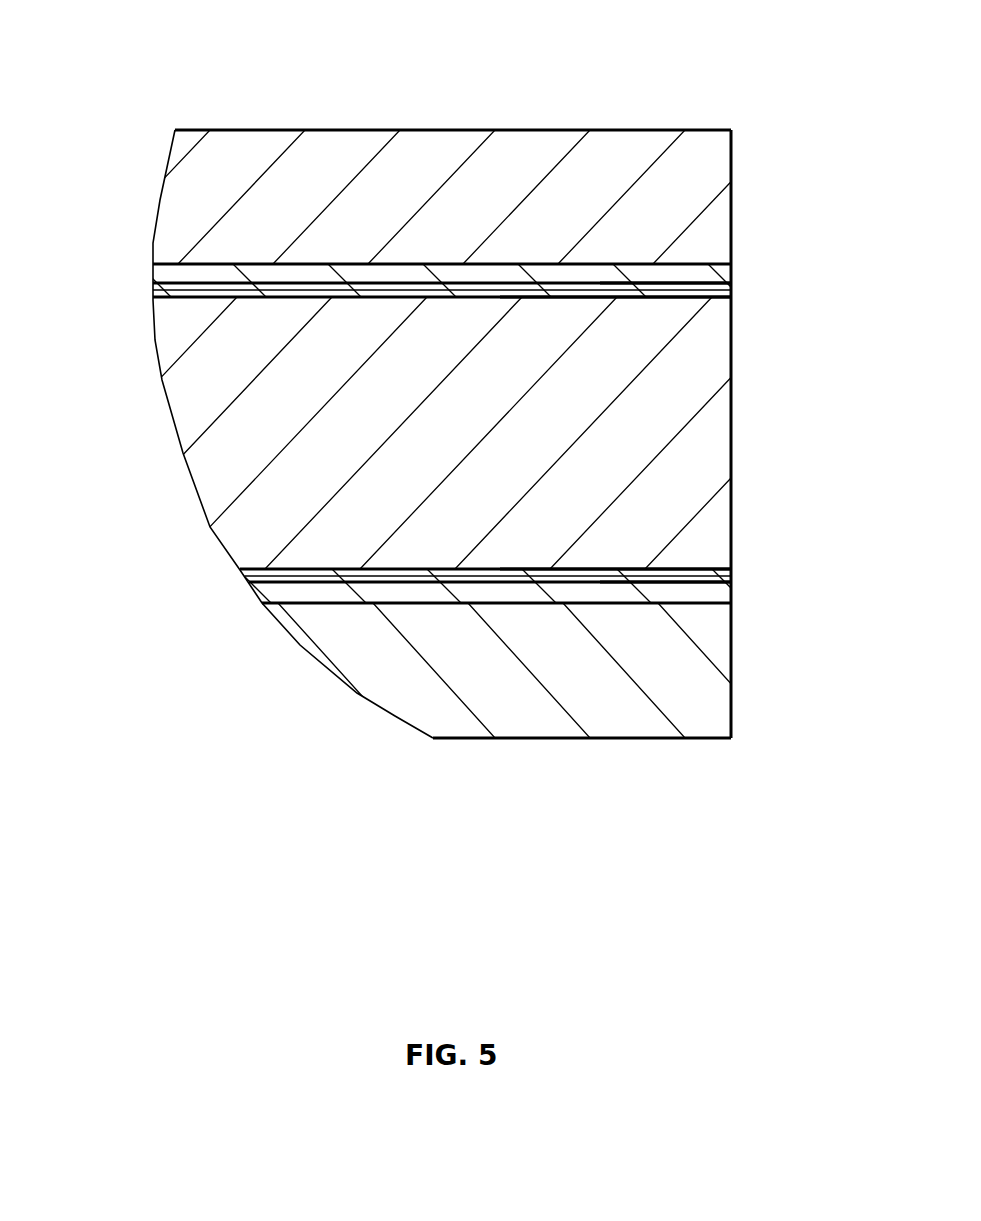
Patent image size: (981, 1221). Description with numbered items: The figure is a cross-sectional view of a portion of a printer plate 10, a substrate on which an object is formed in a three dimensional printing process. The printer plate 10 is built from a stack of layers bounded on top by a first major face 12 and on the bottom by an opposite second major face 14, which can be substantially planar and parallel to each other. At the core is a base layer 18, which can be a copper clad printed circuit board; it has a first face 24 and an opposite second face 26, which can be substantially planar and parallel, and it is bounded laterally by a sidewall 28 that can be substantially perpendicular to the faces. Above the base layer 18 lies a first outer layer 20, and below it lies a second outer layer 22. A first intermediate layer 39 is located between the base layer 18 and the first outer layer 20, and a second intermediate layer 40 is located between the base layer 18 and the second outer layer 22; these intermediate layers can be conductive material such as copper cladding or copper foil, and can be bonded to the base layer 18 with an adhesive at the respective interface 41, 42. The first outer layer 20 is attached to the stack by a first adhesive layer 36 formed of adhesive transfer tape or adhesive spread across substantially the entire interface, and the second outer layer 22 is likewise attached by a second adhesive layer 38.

The printer plate 10 is at (111, 126).
The first major face 12 is at (529, 76).
The second major face 14 is at (584, 778).
The base layer 18 is at (281, 404).
The first outer layer 20 is at (614, 144).
The second outer layer 22 is at (616, 716).
The first face 24 is at (201, 305).
The second face 26 is at (293, 562).
The sidewall 28 is at (735, 425).
The first adhesive layer 36 is at (181, 265).
The second adhesive layer 38 is at (287, 605).
The first intermediate layer 39 is at (595, 302).
The second intermediate layer 40 is at (610, 566).
The interface 41 is at (694, 302).
The interface 42 is at (697, 564).